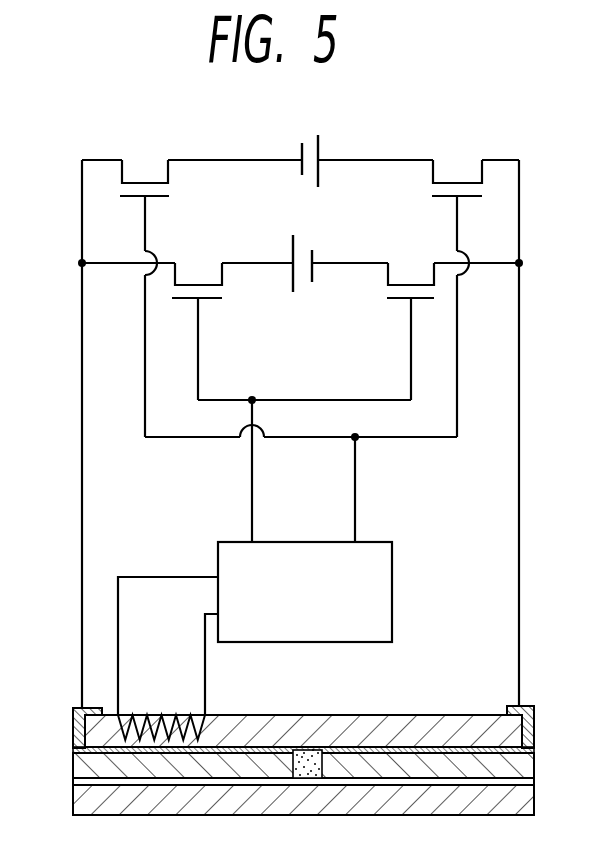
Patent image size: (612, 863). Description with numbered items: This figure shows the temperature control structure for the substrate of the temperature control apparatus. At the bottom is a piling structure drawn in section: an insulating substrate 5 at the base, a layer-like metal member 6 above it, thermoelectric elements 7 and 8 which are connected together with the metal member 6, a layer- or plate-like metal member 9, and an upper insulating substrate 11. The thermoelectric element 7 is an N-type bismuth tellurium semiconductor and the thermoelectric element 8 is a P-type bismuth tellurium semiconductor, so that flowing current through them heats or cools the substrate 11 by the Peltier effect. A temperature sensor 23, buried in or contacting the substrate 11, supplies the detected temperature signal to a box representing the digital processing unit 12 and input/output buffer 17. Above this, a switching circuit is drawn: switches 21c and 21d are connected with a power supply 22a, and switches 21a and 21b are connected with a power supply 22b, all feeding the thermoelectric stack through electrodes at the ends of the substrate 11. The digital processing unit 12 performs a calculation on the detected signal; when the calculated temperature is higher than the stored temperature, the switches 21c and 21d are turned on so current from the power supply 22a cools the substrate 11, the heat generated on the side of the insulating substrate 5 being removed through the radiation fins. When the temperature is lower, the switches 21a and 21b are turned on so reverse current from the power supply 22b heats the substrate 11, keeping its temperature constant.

The insulating substrate 5 is at (507, 795).
The layer-like metal member 6 is at (75, 783).
The thermoelectric element 7 is at (85, 767).
The thermoelectric element 8 is at (512, 768).
The layer- or plate-like metal member 9 is at (520, 742).
The insulating substrate 11 is at (493, 727).
The digital processing unit 12 is at (406, 592).
The input/output buffer 17 is at (380, 607).
The switch 21a is at (142, 172).
The switch 21b is at (457, 168).
The switch 21c is at (192, 268).
The switch 21d is at (405, 270).
The power supply 22a is at (300, 235).
The power supply 22b is at (302, 135).
The temperature sensor 23 is at (140, 718).